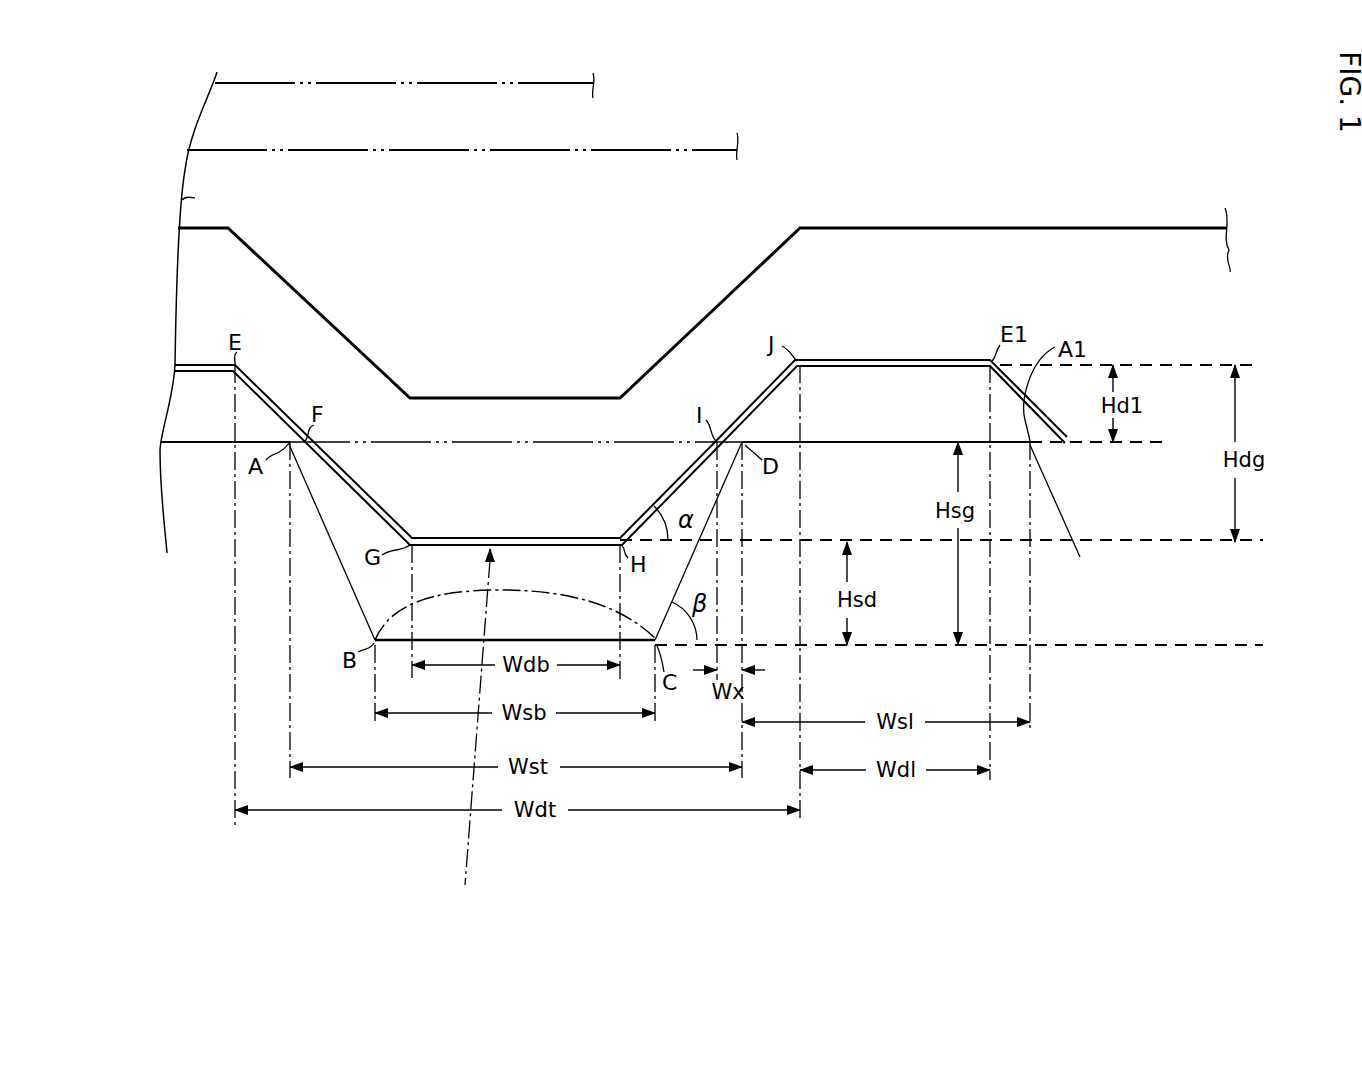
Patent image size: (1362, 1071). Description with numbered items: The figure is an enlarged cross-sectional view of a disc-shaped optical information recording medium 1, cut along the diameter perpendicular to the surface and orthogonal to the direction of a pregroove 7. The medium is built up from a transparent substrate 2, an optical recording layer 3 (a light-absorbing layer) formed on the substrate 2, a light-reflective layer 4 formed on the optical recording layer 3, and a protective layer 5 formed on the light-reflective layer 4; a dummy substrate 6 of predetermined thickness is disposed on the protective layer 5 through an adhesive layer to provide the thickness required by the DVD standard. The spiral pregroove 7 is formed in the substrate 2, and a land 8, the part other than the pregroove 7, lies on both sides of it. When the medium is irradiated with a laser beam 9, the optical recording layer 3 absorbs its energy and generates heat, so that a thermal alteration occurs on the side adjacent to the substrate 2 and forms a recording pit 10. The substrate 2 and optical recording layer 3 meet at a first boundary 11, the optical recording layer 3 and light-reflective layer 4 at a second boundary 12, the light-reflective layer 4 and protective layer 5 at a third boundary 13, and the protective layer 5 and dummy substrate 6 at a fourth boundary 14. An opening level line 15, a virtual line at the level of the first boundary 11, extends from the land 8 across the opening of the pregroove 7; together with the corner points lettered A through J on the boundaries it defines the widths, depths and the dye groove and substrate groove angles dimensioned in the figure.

The optical information recording medium 1 is at (1017, 178).
The transparent substrate 2 is at (186, 492).
The optical recording layer 3 is at (192, 408).
The light-reflective layer 4 is at (183, 288).
The protective layer 5 is at (182, 202).
The dummy substrate 6 is at (222, 112).
The pregroove 7 is at (544, 636).
The land 8 is at (187, 444).
The laser beam 9 is at (474, 830).
The recording pit 10 is at (372, 606).
The first boundary 11 is at (160, 446).
The second boundary 12 is at (174, 370).
The third boundary 13 is at (176, 233).
The fourth boundary 14 is at (180, 151).
The opening level line 15 is at (491, 432).